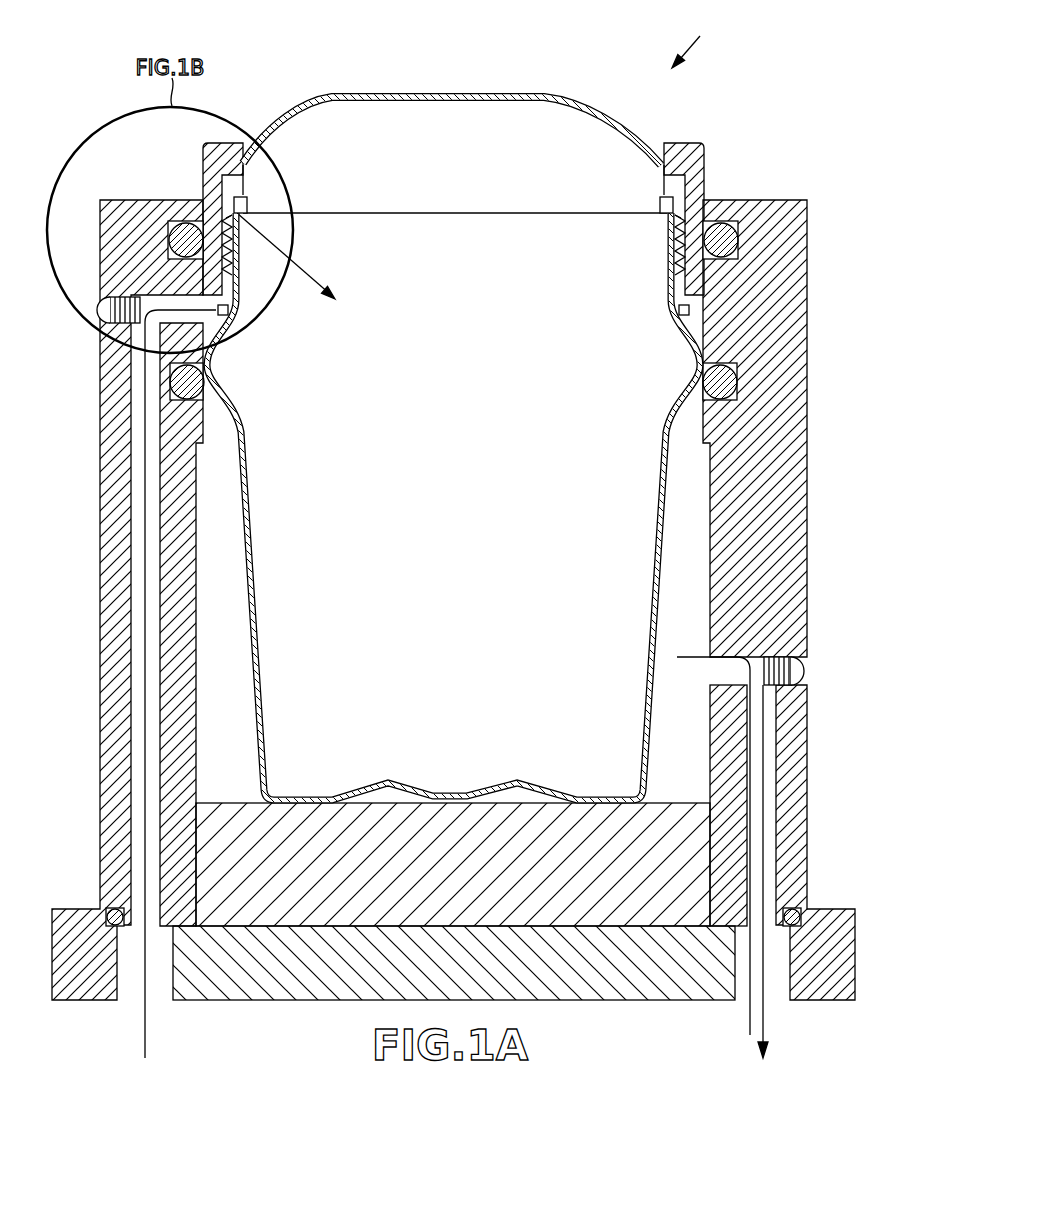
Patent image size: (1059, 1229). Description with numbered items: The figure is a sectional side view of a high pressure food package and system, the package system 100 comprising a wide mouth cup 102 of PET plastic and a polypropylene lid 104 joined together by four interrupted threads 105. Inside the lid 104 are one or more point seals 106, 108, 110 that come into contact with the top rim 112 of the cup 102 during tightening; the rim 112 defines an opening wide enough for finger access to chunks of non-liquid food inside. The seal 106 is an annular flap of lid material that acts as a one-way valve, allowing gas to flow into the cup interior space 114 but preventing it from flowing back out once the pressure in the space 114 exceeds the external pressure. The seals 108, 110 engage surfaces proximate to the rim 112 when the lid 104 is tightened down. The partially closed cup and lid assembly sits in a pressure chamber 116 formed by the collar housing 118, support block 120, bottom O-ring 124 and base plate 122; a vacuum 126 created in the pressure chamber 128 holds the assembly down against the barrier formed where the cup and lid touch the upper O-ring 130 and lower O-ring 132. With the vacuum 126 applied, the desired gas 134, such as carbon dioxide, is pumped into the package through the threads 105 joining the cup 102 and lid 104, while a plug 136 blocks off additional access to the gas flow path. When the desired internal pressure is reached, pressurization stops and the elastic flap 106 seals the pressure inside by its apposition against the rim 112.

The package system 100 is at (703, 35).
The wide mouth cup 102 is at (655, 574).
The lid 104 is at (449, 93).
The interrupted threads 105 is at (230, 252).
The point seal 106 is at (247, 208).
The point seal 108 is at (242, 190).
The point seal 110 is at (203, 183).
The top rim 112 is at (247, 222).
The cup interior space 114 is at (470, 486).
The pressure chamber 116 is at (230, 323).
The collar housing 118 is at (808, 430).
The support block 120 is at (665, 803).
The base plate 122 is at (266, 1000).
The bottom O-ring 124 is at (110, 907).
The vacuum 126 is at (765, 1024).
The pressure chamber 128 is at (235, 718).
The upper O-ring 130 is at (183, 236).
The lower O-ring 132 is at (205, 382).
The gas 134 is at (333, 275).
The plug 136 is at (101, 310).